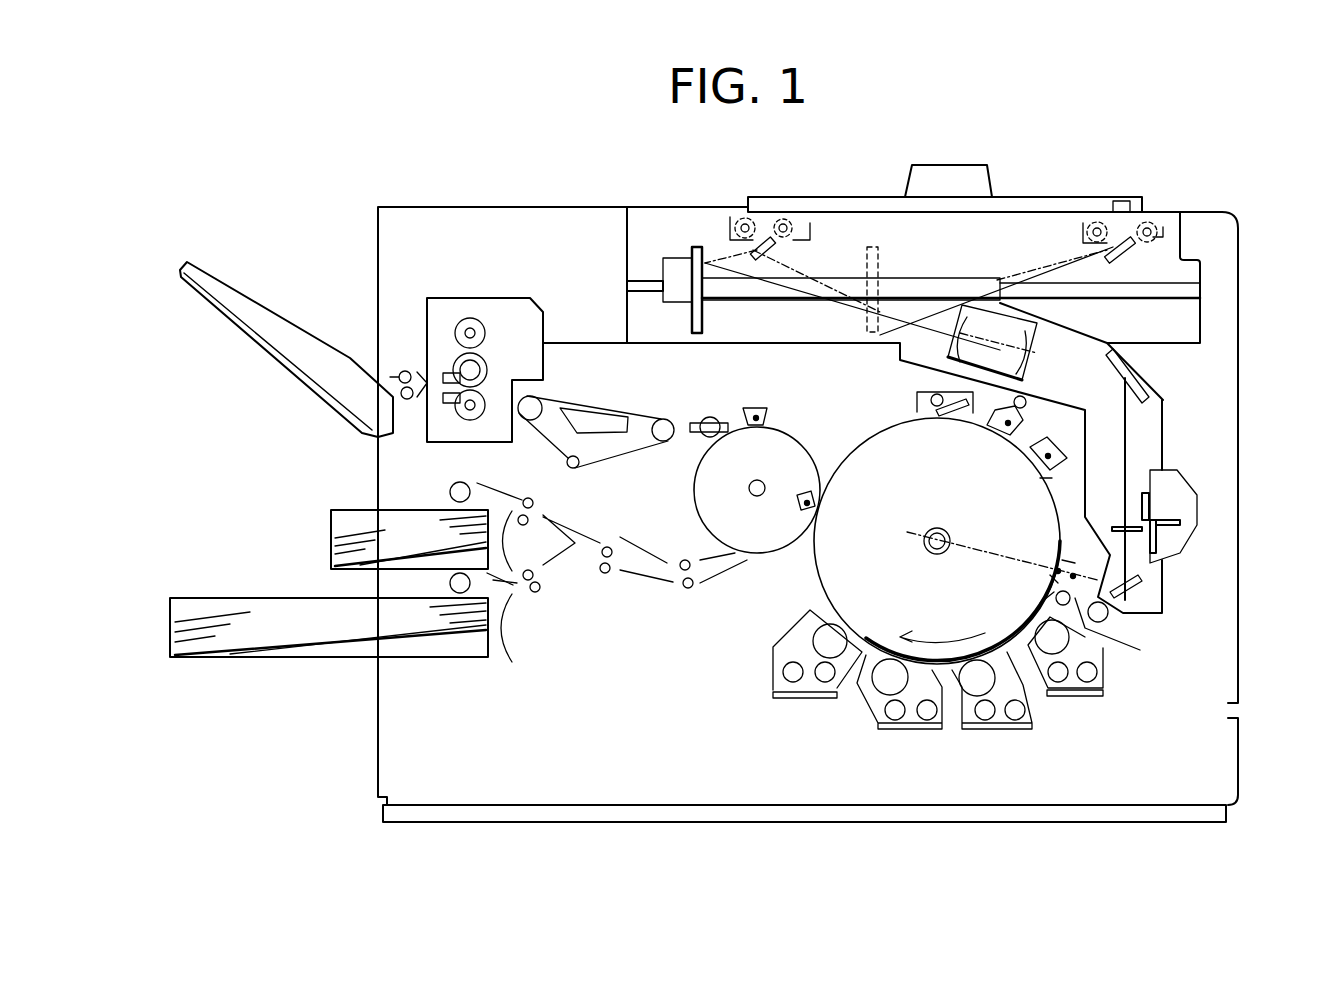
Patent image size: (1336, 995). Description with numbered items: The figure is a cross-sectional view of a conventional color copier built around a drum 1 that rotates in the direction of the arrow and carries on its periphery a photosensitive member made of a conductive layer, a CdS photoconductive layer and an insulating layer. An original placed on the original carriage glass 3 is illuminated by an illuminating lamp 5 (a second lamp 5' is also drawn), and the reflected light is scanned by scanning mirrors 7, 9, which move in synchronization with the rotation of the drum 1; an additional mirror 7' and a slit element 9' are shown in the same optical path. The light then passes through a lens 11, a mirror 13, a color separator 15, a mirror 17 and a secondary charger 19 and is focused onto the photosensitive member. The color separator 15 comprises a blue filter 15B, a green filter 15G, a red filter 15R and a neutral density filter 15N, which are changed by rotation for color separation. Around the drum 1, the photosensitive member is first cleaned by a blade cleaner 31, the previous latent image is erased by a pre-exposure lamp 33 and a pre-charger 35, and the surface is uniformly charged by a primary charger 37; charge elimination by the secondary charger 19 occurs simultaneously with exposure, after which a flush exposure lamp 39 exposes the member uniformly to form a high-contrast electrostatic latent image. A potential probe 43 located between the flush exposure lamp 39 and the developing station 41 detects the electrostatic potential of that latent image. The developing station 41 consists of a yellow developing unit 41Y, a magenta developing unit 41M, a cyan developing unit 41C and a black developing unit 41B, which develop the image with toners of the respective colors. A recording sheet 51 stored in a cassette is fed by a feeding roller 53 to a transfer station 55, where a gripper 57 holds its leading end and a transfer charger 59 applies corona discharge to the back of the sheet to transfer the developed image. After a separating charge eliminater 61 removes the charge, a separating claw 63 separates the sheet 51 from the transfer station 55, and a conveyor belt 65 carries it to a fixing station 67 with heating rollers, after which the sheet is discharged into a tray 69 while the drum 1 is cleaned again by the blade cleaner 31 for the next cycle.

The drum 1 is at (872, 448).
The original carriage glass 3 is at (962, 212).
The illuminating lamp 5 is at (795, 233).
The exposure lamp 5' is at (1134, 280).
The scanning mirror 7 is at (764, 256).
The mirror 7' is at (1069, 288).
The scanning mirror 9 is at (931, 298).
The slit plate 9' is at (842, 293).
The lens 11 is at (1036, 338).
The mirror 13 is at (1148, 380).
The color separator 15 is at (1158, 521).
The blue filter 15B is at (1162, 488).
The green filter 15G is at (1182, 524).
The red filter 15R is at (1174, 553).
The neutral density filter 15N is at (1112, 528).
The mirror 17 is at (1140, 598).
The secondary charger 19 is at (1055, 582).
The blade cleaner 31 is at (907, 392).
The pre-exposure lamp 33 is at (1026, 406).
The pre-charger 35 is at (988, 424).
The primary charger 37 is at (1050, 478).
The flush exposure lamp 39 is at (1108, 624).
The developing station 41 is at (976, 790).
The black developing unit 41B is at (808, 698).
The cyan developing unit 41C is at (911, 729).
The magenta developing unit 41M is at (1003, 729).
The yellow developing unit 41Y is at (1078, 697).
The potential probe 43 is at (1105, 655).
The recording sheet 51 is at (341, 510).
The feeding roller 53 is at (450, 487).
The transfer station 55 is at (694, 494).
The gripper 57 is at (760, 554).
The transfer charger 59 is at (797, 505).
The separating charge eliminater 61 is at (758, 406).
The separating claw 63 is at (706, 417).
The conveyor belt 65 is at (582, 405).
The fixing station 67 is at (545, 318).
The tray 69 is at (252, 333).